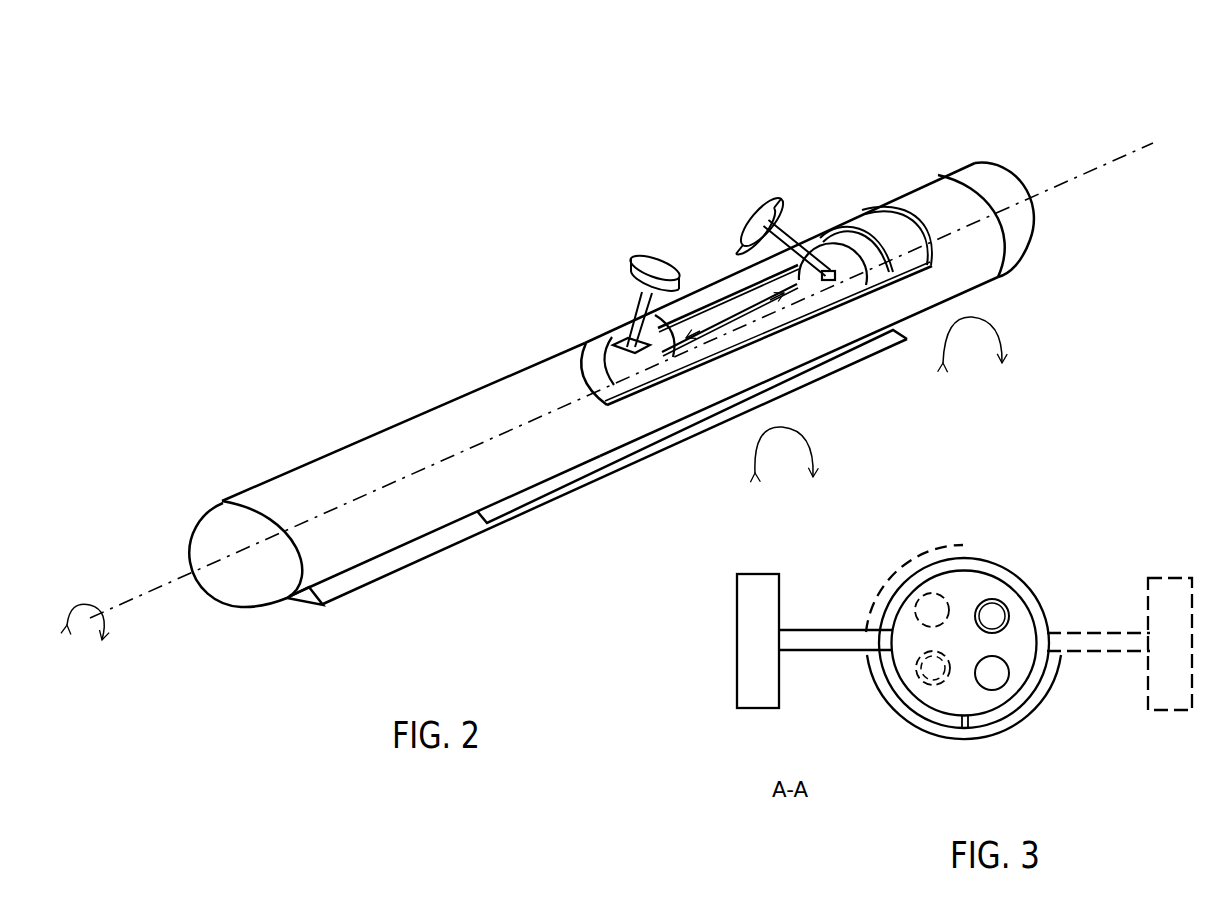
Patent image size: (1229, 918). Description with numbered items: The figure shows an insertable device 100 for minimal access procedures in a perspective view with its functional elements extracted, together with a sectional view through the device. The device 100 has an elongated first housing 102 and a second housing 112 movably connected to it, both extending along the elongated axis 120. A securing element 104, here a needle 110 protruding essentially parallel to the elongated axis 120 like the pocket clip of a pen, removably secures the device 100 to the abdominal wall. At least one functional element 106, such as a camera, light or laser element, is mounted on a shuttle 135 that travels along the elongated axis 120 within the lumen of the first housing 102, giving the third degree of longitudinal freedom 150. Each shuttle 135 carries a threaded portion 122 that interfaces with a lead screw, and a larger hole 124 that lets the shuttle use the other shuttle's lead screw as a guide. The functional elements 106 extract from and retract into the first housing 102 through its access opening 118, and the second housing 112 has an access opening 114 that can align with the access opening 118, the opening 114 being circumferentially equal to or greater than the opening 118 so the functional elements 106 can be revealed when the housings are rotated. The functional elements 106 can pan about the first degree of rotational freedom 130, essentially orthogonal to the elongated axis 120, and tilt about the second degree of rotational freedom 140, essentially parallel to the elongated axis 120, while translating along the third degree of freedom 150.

In FIG. 2, the insertable device 100 is at (887, 93).
In FIG. 2, the first housing 102 is at (557, 352).
In FIG. 3, the first housing 102 is at (1010, 563).
In FIG. 2, the securing element 104 is at (365, 585).
In FIG. 2, the functional element 106 is at (740, 217).
In FIG. 3, the functional element 106 is at (737, 693).
In FIG. 2, the needle 110 is at (560, 497).
In FIG. 2, the second housing 112 is at (257, 487).
In FIG. 3, the second housing 112 is at (936, 742).
In FIG. 2, the access opening of second housing 114 is at (893, 205).
In FIG. 3, the access opening of second housing 114 is at (1058, 653).
In FIG. 2, the access opening of first housing 118 is at (858, 225).
In FIG. 3, the access opening of first housing 118 is at (963, 571).
In FIG. 2, the elongated axis 120 is at (183, 580).
In FIG. 3, the threaded portion 122 is at (992, 617).
In FIG. 3, the hole 124 is at (992, 673).
In FIG. 2, the first degree of rotational freedom 130 is at (960, 323).
In FIG. 2, the shuttle 135 is at (618, 327).
In FIG. 3, the shuttle 135 is at (930, 594).
In FIG. 2, the second degree of rotational freedom 140 is at (107, 623).
In FIG. 2, the third degree of longitudinal freedom 150 is at (777, 287).